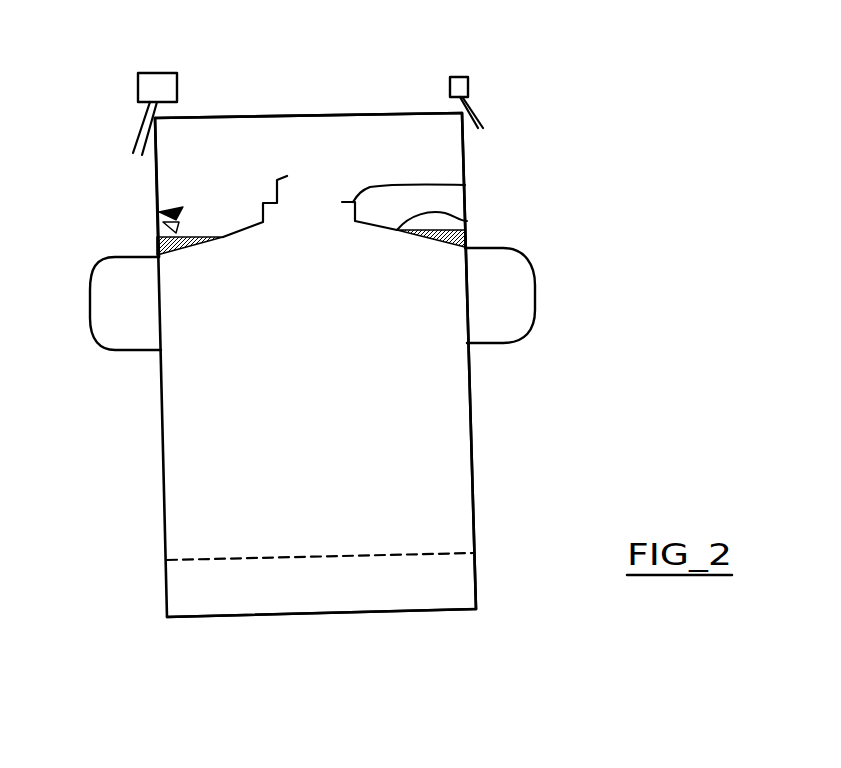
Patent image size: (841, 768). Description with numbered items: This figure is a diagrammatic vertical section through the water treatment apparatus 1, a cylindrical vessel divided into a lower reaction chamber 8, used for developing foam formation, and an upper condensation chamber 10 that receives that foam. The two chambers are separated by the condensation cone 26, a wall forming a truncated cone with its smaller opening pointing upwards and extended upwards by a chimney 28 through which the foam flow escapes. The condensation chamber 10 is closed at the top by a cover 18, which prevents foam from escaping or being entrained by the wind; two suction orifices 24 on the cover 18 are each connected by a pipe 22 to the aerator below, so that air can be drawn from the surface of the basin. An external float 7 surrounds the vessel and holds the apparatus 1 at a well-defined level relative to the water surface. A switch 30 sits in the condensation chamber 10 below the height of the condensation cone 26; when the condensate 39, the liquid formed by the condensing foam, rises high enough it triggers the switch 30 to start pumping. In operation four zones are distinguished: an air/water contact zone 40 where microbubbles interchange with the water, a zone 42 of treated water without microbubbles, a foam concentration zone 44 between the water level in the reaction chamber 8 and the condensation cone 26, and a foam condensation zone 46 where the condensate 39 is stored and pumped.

The water treatment apparatus 1 is at (580, 238).
The external float 7 is at (515, 295).
The reaction chamber 8 is at (472, 408).
The condensation chamber 10 is at (462, 153).
The cover 18 is at (298, 115).
The pipes 22 is at (140, 118).
The suction orifices 24 is at (160, 78).
The condensation cone 26 is at (467, 221).
The chimney 28 is at (344, 200).
The switch 30 is at (157, 208).
The condensate 39 is at (157, 247).
The air/water contact zone 40 is at (438, 482).
The zone of treated water 42 is at (438, 590).
The foam concentration zone 44 is at (465, 185).
The foam condensation zone 46 is at (180, 182).